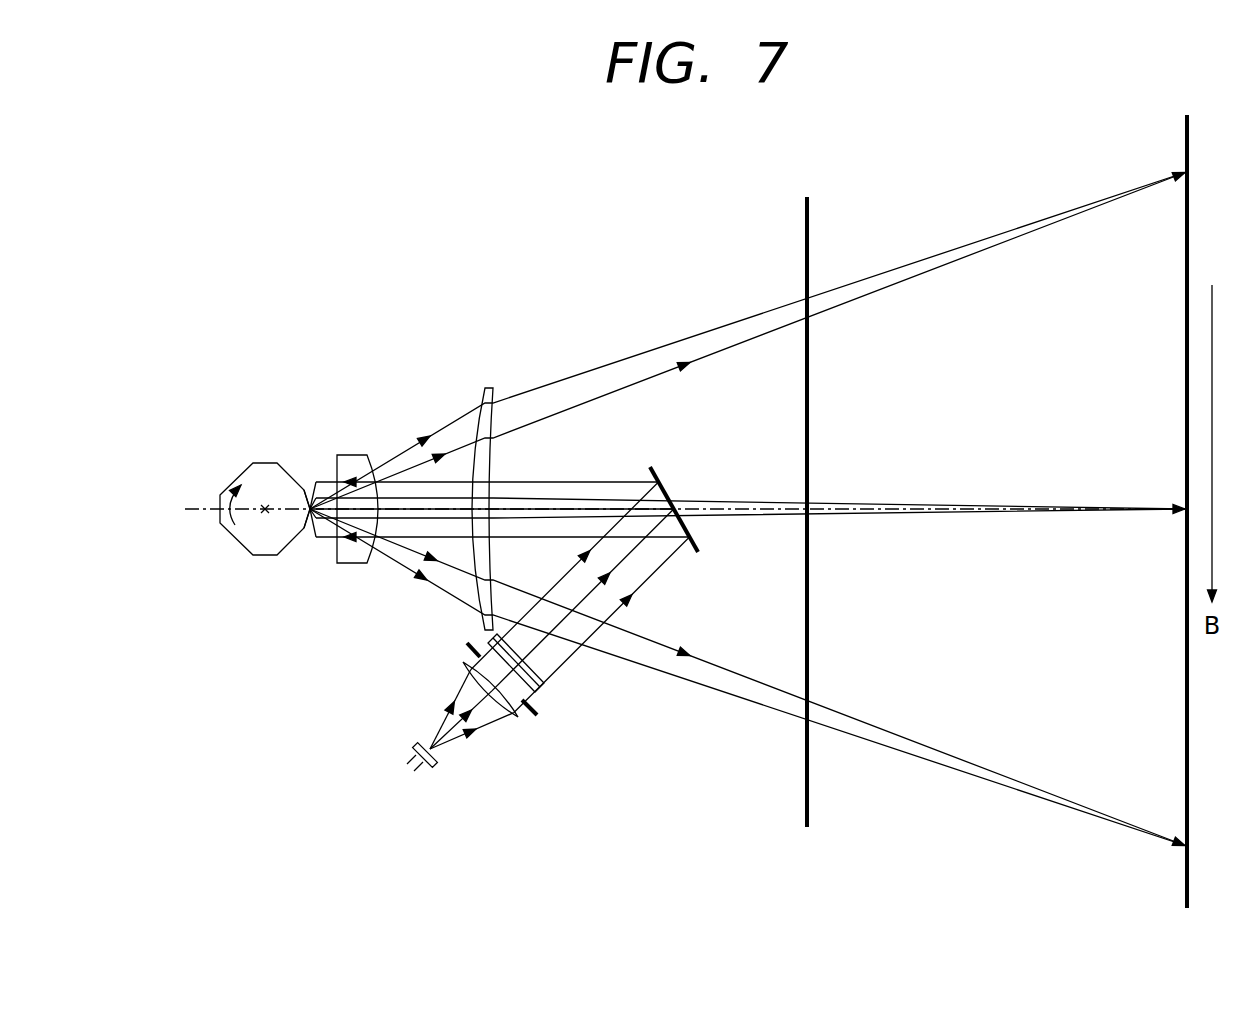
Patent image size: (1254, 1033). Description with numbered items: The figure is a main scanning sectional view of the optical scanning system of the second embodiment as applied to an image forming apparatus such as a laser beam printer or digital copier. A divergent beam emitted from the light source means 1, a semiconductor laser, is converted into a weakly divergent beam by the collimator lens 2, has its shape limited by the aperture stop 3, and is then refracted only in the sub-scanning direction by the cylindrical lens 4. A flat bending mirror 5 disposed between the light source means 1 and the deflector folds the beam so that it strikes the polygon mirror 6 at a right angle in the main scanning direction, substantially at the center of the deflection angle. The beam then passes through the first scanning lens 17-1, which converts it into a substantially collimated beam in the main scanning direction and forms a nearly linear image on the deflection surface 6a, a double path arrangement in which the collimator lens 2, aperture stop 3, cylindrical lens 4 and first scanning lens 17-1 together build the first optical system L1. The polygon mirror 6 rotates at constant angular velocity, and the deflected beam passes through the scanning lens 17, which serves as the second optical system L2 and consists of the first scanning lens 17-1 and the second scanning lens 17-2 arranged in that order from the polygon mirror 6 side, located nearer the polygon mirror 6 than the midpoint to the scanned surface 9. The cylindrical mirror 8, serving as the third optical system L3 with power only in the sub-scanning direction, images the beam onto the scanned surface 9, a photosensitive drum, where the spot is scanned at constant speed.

The light source means 1 is at (438, 766).
The collimator lens 2 is at (514, 718).
The aperture stop 3 is at (538, 713).
The cylindrical lens 4 is at (547, 688).
The bending mirror 5 is at (667, 483).
The polygon mirror 6 is at (243, 470).
The deflection surface 6a is at (313, 484).
The cylindrical mirror 8 is at (810, 228).
The scanned surface 9 is at (1190, 155).
The scanning lens 17 is at (285, 617).
The first scanning lens 17-1 is at (348, 563).
The second scanning lens 17-2 is at (485, 617).
The first optical system L1 is at (264, 649).
The second optical system L2 is at (500, 368).
The third optical system L3 is at (863, 169).